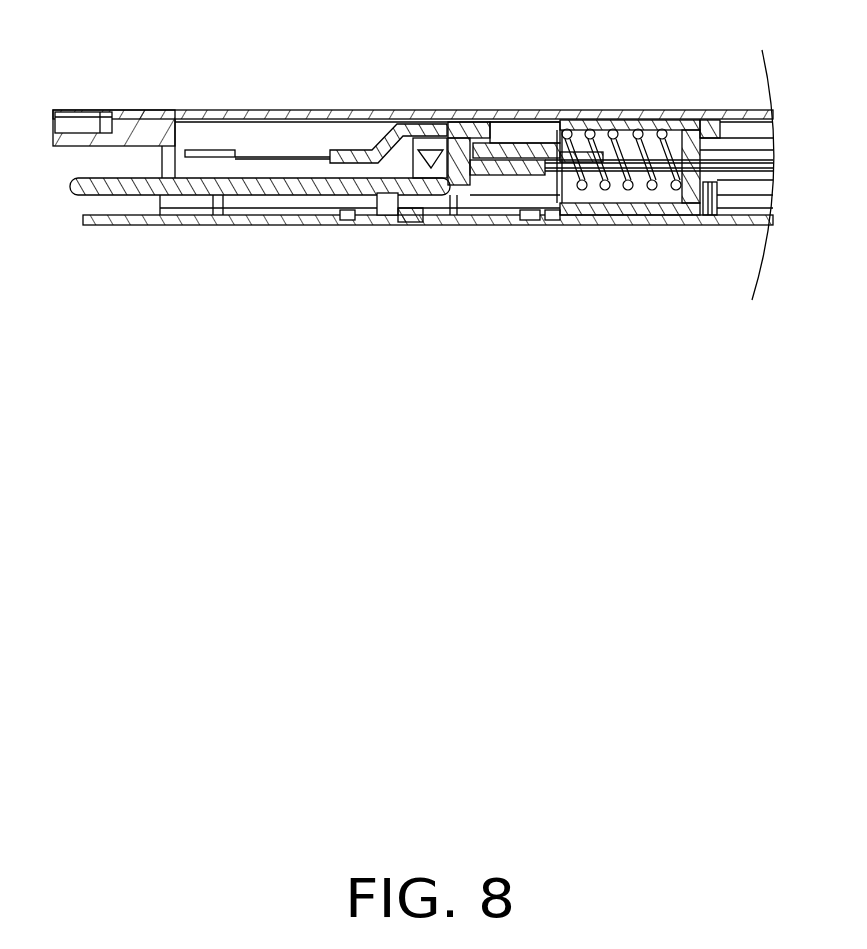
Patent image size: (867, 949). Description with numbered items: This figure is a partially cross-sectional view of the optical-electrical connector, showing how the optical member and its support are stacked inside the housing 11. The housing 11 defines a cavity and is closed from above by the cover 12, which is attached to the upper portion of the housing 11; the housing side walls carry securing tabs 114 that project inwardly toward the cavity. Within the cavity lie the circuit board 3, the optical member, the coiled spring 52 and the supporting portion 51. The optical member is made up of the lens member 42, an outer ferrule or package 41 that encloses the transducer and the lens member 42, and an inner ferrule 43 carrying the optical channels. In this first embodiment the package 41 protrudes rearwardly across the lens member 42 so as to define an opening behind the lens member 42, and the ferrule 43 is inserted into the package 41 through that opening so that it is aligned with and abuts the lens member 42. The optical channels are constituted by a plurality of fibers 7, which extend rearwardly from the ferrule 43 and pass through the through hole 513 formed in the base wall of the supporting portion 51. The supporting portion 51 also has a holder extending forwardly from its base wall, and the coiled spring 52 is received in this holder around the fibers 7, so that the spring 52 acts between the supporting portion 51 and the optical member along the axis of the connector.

The cover 12 is at (237, 115).
The circuit board 3 is at (133, 195).
The housing 11 is at (224, 218).
The package 41 is at (433, 123).
The lens member 42 is at (400, 140).
The ferrule 43 is at (481, 128).
The fibers 7 is at (474, 180).
The coiled spring 52 is at (600, 128).
The supporting portion 51 is at (637, 210).
The through hole 513 is at (710, 128).
The securing tabs 114 is at (707, 196).